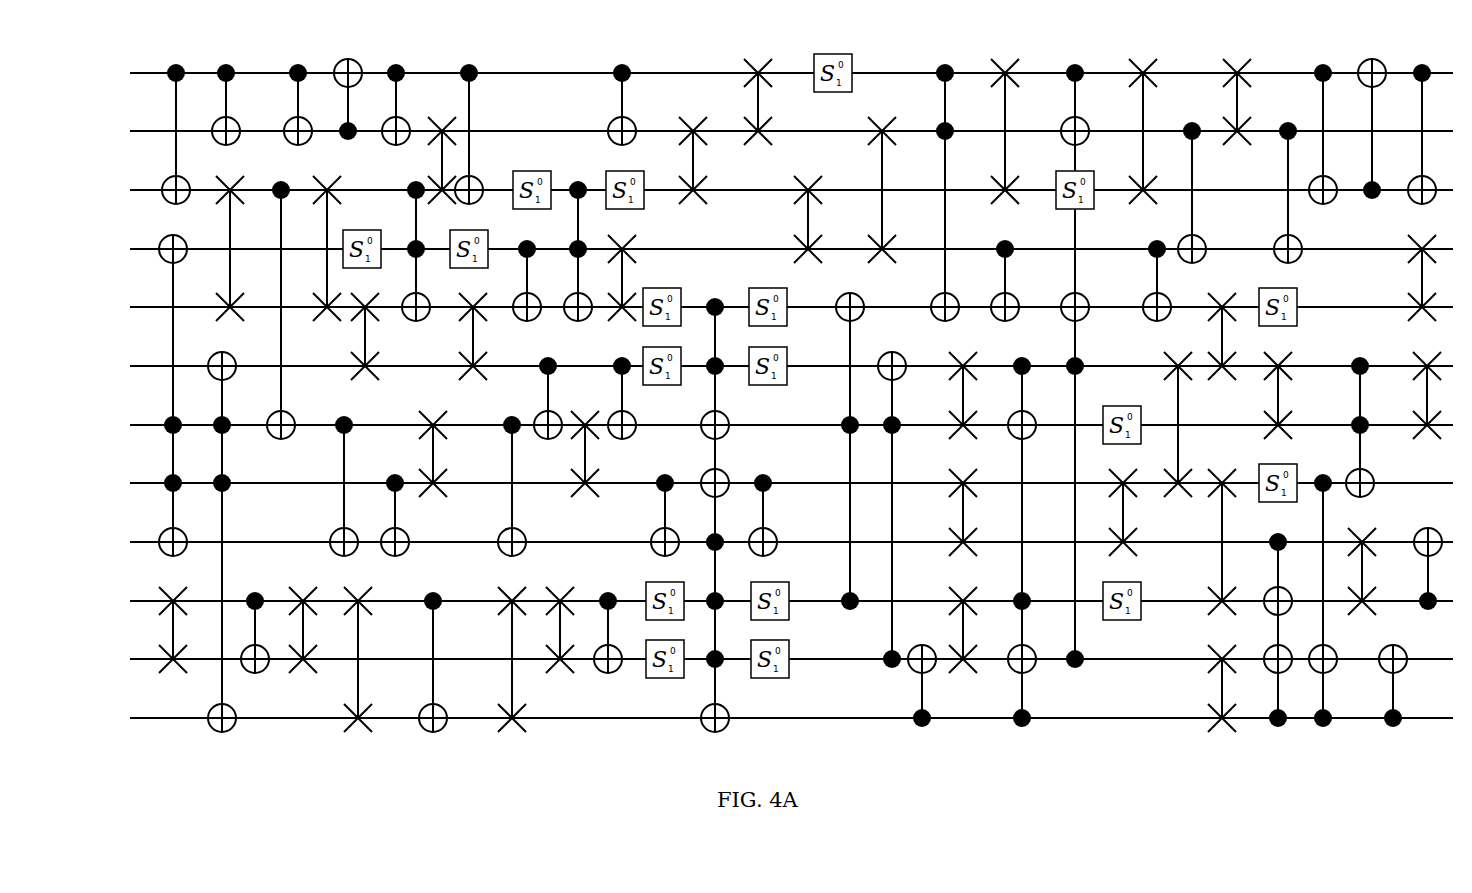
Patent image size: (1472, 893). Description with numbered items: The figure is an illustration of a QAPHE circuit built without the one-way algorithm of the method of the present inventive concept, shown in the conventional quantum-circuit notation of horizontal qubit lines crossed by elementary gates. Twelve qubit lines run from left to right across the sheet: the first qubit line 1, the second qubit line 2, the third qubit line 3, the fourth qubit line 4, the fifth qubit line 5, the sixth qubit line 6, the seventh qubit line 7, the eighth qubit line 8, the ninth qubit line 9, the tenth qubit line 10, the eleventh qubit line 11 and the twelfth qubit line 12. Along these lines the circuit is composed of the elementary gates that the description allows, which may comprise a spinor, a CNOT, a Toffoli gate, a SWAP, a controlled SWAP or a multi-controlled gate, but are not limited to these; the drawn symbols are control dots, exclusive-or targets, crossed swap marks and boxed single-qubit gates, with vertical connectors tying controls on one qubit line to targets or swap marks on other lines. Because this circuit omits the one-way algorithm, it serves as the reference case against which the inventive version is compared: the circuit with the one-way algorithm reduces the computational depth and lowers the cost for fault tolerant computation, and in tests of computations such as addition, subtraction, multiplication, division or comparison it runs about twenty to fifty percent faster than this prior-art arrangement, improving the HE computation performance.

The qubit wire c1 1 is at (767, 73).
The qubit wire c2 2 is at (767, 131).
The qubit wire c3 3 is at (767, 190).
The qubit wire c4 4 is at (767, 249).
The qubit wire c5 5 is at (767, 307).
The qubit wire c6 6 is at (767, 366).
The qubit wire c7 7 is at (767, 425).
The qubit wire c8 8 is at (767, 483).
The qubit wire c9 9 is at (767, 542).
The qubit wire c10 10 is at (766, 601).
The qubit wire c11 11 is at (766, 659).
The qubit wire c12 12 is at (766, 718).